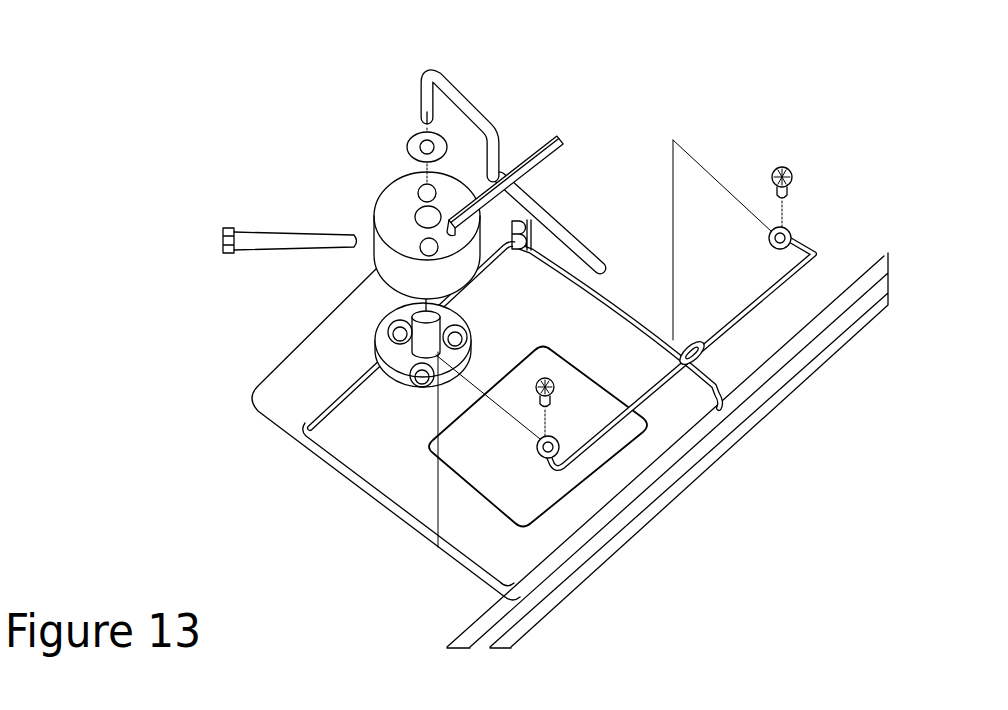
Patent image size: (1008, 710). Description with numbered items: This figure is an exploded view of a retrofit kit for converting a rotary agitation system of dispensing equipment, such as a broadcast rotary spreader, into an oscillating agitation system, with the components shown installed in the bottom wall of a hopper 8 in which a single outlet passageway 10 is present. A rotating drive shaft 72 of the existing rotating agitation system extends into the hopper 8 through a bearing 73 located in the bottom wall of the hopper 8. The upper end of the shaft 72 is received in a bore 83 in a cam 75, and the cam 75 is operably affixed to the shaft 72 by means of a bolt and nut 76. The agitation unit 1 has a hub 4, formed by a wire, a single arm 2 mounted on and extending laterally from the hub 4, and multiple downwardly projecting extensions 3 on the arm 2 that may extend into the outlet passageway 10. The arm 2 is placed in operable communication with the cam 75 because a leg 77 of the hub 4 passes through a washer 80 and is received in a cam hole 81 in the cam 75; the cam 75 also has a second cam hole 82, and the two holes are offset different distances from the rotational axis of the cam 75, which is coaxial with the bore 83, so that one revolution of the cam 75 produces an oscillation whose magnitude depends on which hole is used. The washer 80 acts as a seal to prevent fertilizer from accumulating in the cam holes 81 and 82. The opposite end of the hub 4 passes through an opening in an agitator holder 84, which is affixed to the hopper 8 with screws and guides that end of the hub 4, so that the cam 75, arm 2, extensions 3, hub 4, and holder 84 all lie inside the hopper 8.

The agitation unit 1 is at (608, 108).
The arm 2 is at (540, 138).
The extensions 3 is at (549, 159).
The hub 4 is at (465, 97).
The hopper 8 is at (708, 479).
The outlet passageway 10 is at (646, 416).
The rotating drive shaft 72 is at (306, 432).
The bearing 73 is at (380, 359).
The cam 75 is at (371, 206).
The bolt and nut 76 is at (302, 230).
The leg 77 is at (423, 102).
The washer 80 is at (410, 132).
The cam hole 81 is at (418, 185).
The second cam hole 82 is at (418, 253).
The bore 83 is at (411, 208).
The agitator holder 84 is at (818, 240).